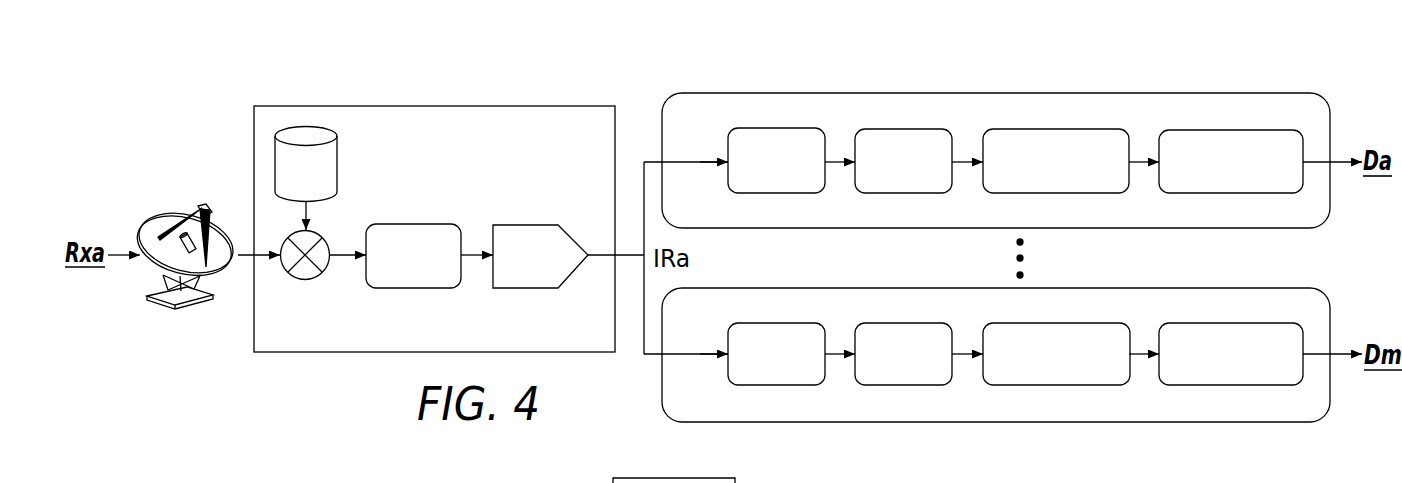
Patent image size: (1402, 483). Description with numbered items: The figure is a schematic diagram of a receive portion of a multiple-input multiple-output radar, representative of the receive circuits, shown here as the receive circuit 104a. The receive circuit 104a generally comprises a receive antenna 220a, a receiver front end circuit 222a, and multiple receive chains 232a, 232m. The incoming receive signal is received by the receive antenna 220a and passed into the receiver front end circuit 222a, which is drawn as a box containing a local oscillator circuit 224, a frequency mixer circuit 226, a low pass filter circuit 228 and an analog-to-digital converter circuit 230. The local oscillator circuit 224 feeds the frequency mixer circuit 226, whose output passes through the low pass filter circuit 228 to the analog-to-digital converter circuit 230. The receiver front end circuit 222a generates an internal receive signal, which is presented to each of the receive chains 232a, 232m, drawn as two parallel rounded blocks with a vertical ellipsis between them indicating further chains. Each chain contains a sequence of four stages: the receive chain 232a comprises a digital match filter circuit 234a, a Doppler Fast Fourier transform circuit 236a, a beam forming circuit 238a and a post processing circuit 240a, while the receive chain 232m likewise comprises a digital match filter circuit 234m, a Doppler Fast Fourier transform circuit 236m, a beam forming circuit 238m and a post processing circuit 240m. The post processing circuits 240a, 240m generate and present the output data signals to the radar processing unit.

The receive circuit 104a is at (887, 76).
The receive antenna 220a is at (147, 227).
The receiver front end circuit 222a is at (392, 104).
The local oscillator circuit 224 is at (327, 177).
The frequency mixer circuit 226 is at (328, 268).
The low pass filter circuit 228 is at (433, 270).
The analog-to-digital converter circuit 230 is at (553, 270).
The receive chain 232a is at (763, 91).
The receive chain 232m is at (827, 285).
The digital match filter circuit 234a is at (776, 160).
The Doppler Fast Fourier transform circuit 236a is at (903, 161).
The beam forming circuit 238a is at (1056, 161).
The post processing circuit 240a is at (1231, 161).
The digital match filter circuit 234m is at (776, 354).
The Doppler Fast Fourier transform circuit 236m is at (903, 354).
The beam forming circuit 238m is at (1056, 354).
The post processing circuit 240m is at (1231, 354).